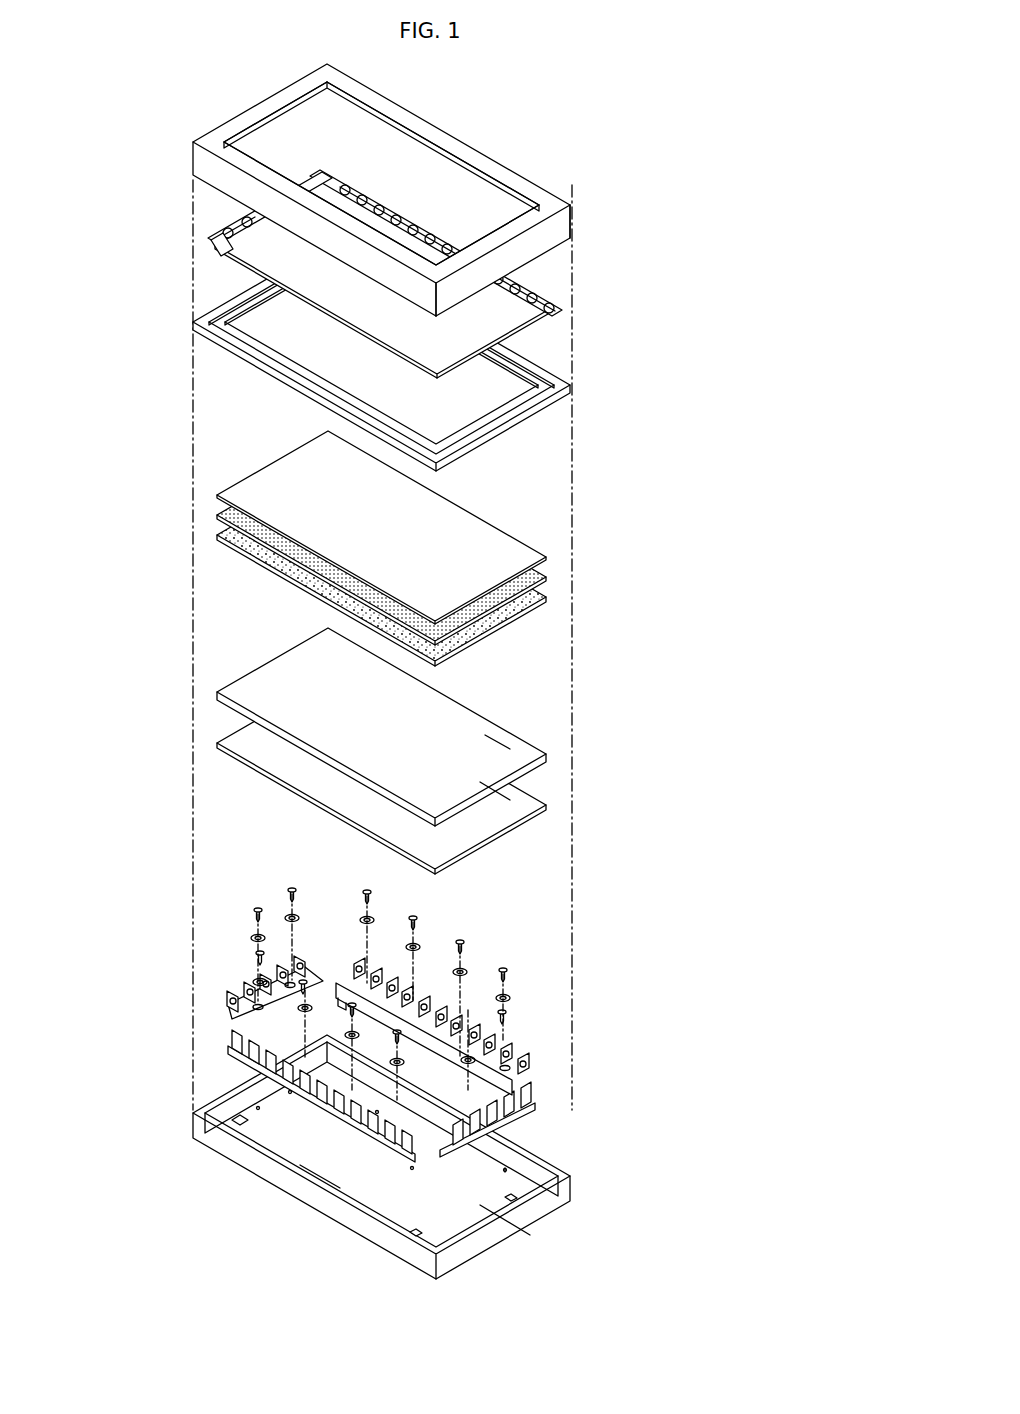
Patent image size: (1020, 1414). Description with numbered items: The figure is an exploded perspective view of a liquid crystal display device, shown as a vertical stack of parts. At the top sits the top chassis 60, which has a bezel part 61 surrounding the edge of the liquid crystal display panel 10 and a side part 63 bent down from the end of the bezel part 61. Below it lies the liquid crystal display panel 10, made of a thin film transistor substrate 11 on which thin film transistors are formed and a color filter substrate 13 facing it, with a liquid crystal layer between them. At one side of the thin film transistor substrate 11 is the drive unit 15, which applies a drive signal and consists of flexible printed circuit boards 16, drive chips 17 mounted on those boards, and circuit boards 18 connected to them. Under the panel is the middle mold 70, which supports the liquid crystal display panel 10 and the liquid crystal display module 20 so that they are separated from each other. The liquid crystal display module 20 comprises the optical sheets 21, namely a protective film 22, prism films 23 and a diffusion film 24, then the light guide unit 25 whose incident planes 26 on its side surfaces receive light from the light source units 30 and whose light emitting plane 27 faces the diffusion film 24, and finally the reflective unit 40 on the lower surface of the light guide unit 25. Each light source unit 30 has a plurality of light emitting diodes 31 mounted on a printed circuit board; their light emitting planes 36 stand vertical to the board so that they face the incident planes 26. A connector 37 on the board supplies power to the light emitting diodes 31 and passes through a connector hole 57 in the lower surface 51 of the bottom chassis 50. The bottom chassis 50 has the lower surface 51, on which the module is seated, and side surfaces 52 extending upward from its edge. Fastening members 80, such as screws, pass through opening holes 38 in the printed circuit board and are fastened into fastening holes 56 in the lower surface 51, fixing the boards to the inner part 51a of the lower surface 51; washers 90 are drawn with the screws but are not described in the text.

The liquid crystal display panel 10 is at (464, 274).
The thin film transistor substrate 11 is at (527, 328).
The color filter substrate 13 is at (527, 312).
The drive unit 15 is at (198, 236).
The flexible printed circuit boards 16 is at (215, 256).
The drive chips 17 is at (216, 242).
The circuit boards 18 is at (224, 226).
The liquid crystal display module 20 is at (467, 796).
The optical sheets 21 is at (467, 548).
The protective film 22 is at (550, 555).
The prism films 23 is at (550, 577).
The diffusion film 24 is at (550, 600).
The light guide unit 25 is at (548, 754).
The incident planes 26 is at (497, 790).
The light emitting plane 27 is at (497, 742).
The light source units 30 is at (436, 1025).
The light emitting diodes 31 is at (232, 1000).
The light emitting planes 36 is at (308, 965).
The connector 37 is at (228, 1030).
The opening holes 38 is at (530, 1063).
The reflective unit 40 is at (548, 818).
The bottom chassis 50 is at (430, 1157).
The lower surface 51 is at (470, 1181).
The inner part 51a is at (330, 1173).
The side surfaces 52 is at (507, 1223).
The fastening holes 56 is at (515, 1160).
The connector hole 57 is at (235, 1120).
The top chassis 60 is at (430, 190).
The bezel part 61 is at (452, 137).
The side part 63 is at (556, 240).
The middle mold 70 is at (578, 387).
The fastening members 80 is at (507, 968).
The washer 90 is at (530, 1041).